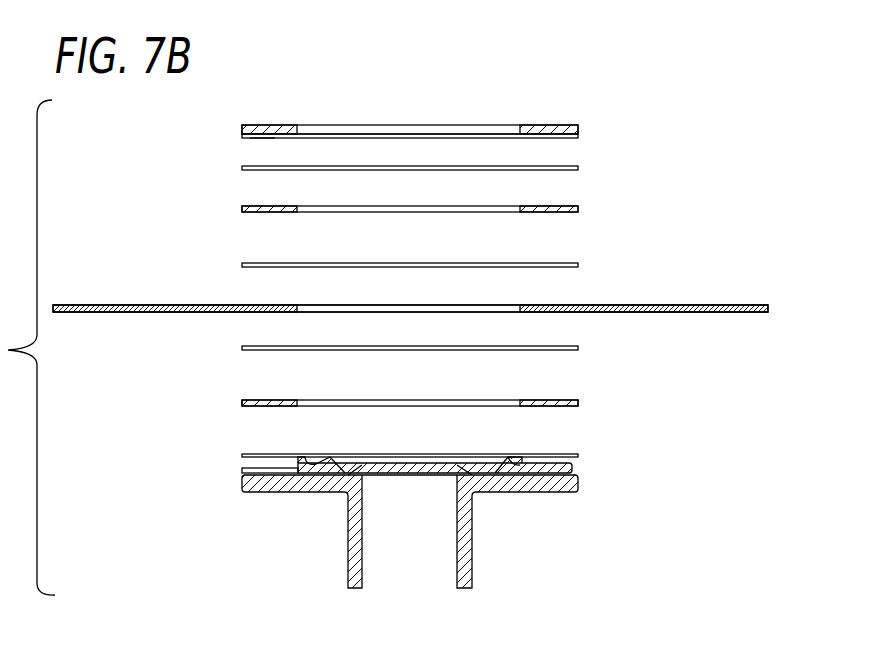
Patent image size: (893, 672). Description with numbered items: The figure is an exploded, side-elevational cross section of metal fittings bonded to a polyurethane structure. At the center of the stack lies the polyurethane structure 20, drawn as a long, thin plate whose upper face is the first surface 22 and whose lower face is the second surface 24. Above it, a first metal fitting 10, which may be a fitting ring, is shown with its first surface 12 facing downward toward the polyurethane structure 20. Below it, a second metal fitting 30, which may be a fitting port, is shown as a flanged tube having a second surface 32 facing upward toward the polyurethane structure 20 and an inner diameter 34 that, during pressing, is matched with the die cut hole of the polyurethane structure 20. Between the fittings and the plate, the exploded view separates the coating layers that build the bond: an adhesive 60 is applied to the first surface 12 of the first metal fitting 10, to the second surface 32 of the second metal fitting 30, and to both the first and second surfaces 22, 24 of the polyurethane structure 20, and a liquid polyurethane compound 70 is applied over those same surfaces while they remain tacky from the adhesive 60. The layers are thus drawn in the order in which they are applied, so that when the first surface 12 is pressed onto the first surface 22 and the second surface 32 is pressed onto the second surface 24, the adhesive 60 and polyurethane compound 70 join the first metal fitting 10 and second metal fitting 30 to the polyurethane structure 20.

The first metal fitting 10 is at (413, 129).
The first surface of the first metal fitting 12 is at (262, 137).
The polyurethane structure 20 is at (442, 307).
The first surface of the polyurethane structure 22 is at (695, 305).
The second surface of the polyurethane structure 24 is at (718, 312).
The second metal fitting 30 is at (444, 526).
The second surface of the second metal fitting 32 is at (570, 470).
The inner diameter of the second metal fitting 34 is at (522, 467).
The adhesive 60 is at (242, 168).
The liquid polyurethane compound 70 is at (242, 208).